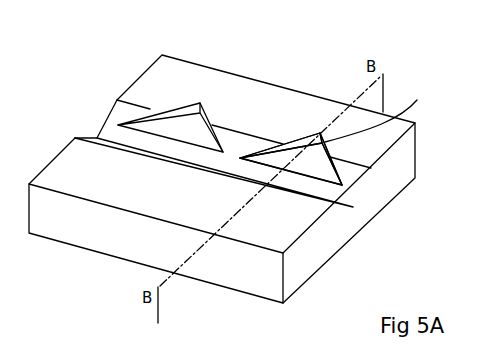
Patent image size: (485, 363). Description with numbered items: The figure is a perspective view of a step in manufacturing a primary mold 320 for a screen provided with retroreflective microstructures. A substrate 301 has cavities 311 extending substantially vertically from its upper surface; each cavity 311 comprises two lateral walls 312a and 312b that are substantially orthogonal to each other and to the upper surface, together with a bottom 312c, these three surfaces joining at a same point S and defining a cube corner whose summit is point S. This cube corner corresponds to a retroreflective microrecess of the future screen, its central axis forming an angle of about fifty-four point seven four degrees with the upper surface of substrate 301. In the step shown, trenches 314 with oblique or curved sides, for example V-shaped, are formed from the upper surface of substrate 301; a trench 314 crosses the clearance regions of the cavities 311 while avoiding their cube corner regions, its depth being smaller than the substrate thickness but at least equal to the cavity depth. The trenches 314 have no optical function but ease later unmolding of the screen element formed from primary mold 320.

The substrate 301 is at (63, 224).
The primary mold 320 is at (93, 101).
The trenches 314 is at (340, 198).
The cavities 311 is at (303, 152).
The lateral wall 312a is at (287, 142).
The lateral wall 312b is at (336, 143).
The bottom 312c is at (345, 178).
The point S is at (373, 113).